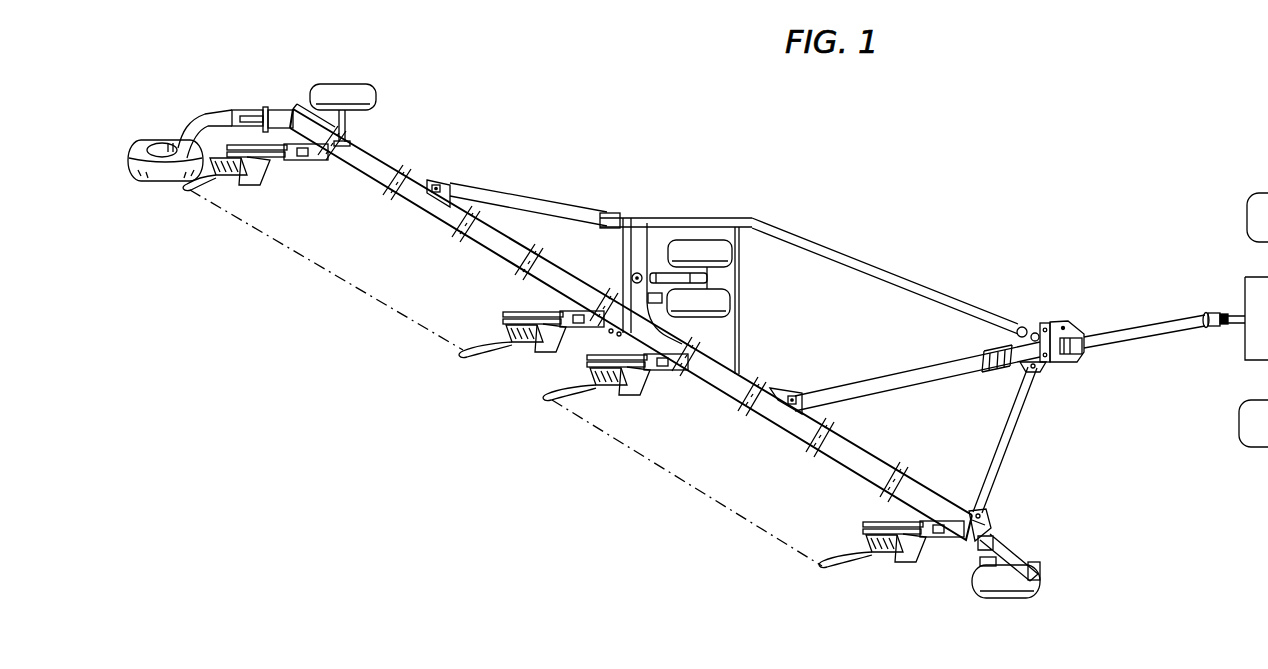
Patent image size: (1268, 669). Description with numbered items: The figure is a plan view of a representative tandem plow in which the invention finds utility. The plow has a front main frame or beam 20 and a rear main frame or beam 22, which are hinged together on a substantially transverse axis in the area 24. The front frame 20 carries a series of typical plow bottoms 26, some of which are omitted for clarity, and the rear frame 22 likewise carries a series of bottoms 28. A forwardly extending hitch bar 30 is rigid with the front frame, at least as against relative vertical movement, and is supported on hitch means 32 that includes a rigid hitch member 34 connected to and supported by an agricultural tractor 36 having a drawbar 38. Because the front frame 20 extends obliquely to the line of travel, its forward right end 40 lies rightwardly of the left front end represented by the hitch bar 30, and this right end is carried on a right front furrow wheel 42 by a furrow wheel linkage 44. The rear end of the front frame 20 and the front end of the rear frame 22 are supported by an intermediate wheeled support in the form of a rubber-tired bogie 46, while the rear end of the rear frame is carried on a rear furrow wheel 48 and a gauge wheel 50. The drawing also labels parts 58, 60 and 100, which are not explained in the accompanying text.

The front main frame 20 is at (877, 459).
The rear main frame 22 is at (402, 197).
The hinge area 24 is at (632, 216).
The plow bottoms 26 is at (824, 570).
The bottoms 28 is at (467, 353).
The hitch bar 30 is at (880, 382).
The hitch means 32 is at (1108, 317).
The hitch member 34 is at (1156, 339).
The agricultural tractor 36 is at (1245, 284).
The drawbar 38 is at (1232, 314).
The forward right end 40 is at (986, 529).
The right front furrow wheel 42 is at (1004, 593).
The furrow wheel linkage 44 is at (1010, 556).
The bogie 46 is at (705, 245).
The rear furrow wheel 48 is at (165, 178).
The gauge wheel 50 is at (333, 92).
The pivot 58 is at (1042, 325).
The clamp 60 is at (1000, 350).
The wheel support 100 is at (983, 566).